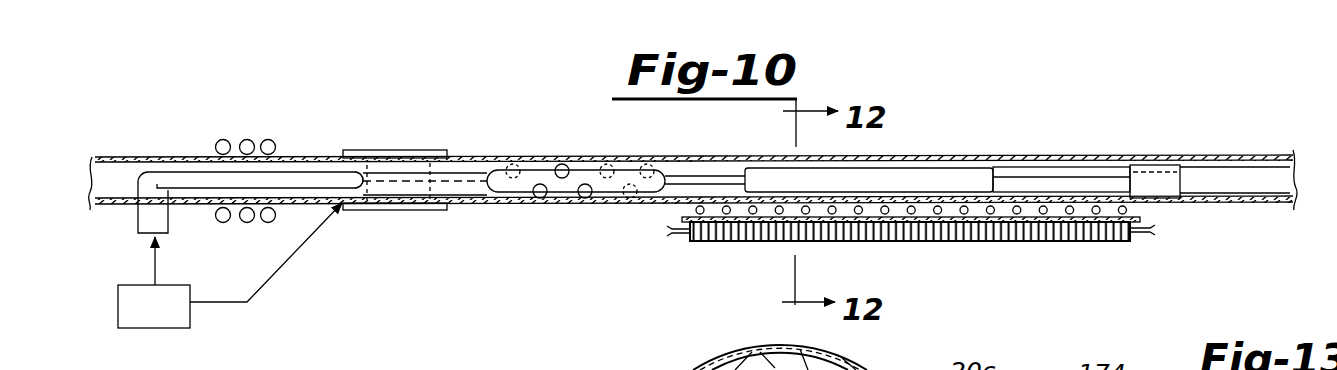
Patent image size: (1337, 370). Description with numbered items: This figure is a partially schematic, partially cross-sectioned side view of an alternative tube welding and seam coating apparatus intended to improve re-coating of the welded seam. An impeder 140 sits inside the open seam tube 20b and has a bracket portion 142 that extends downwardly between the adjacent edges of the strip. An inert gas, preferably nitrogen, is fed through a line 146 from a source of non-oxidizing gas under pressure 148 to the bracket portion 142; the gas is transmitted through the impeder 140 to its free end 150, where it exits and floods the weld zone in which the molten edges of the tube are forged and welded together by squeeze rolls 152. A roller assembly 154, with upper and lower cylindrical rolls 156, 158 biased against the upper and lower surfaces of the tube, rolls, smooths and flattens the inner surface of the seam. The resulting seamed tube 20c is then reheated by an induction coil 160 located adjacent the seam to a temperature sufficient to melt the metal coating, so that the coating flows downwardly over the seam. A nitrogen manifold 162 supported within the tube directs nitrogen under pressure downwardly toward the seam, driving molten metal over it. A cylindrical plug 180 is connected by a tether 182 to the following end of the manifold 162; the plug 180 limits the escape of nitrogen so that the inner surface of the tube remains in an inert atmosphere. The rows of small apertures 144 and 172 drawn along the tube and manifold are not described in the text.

The open seam tube 20b is at (125, 157).
The seamed tube 20c is at (1037, 157).
The impeder 140 is at (200, 182).
The bracket portion 142 is at (150, 215).
The apertures 144 is at (268, 141).
The line 146 is at (157, 267).
The source of non-oxidizing gas under pressure 148 is at (148, 328).
The free end of the impeder 150 is at (353, 176).
The squeeze rolls 152 is at (402, 168).
The roller assembly 154 is at (585, 176).
The upper cylindrical roll 156 is at (548, 165).
The lower cylindrical roll 158 is at (622, 198).
The induction coil 160 is at (727, 242).
The nitrogen manifold 162 is at (887, 184).
The holes 172 is at (1042, 214).
The cylindrical plug 180 is at (1162, 186).
The tether 182 is at (1090, 176).